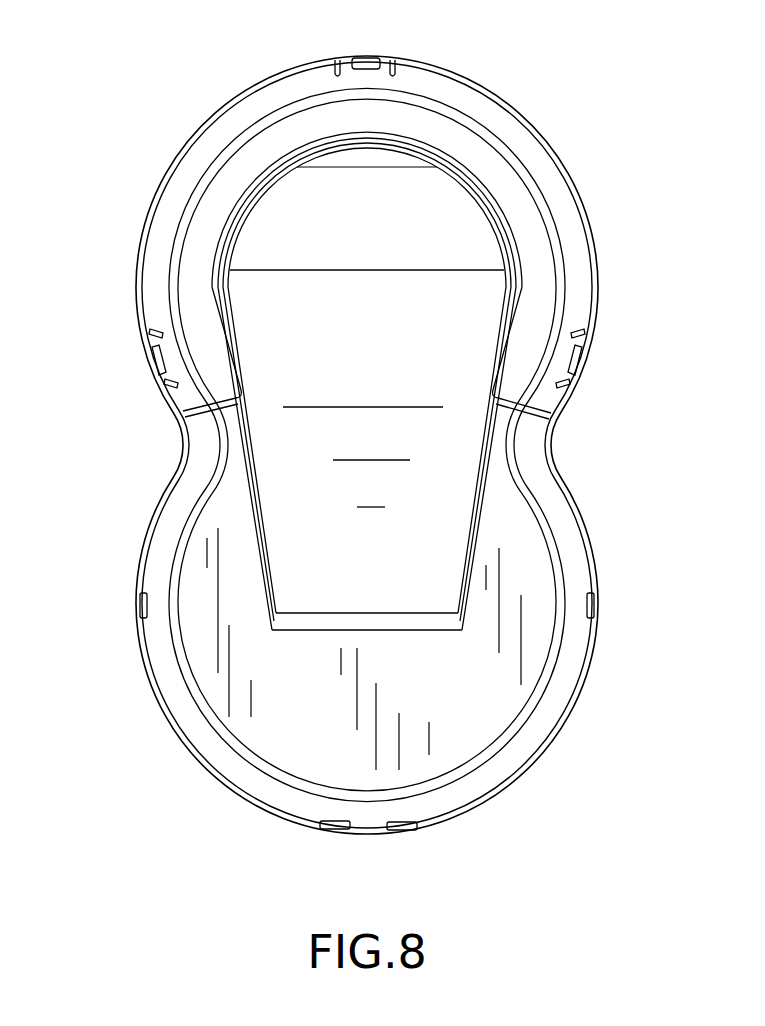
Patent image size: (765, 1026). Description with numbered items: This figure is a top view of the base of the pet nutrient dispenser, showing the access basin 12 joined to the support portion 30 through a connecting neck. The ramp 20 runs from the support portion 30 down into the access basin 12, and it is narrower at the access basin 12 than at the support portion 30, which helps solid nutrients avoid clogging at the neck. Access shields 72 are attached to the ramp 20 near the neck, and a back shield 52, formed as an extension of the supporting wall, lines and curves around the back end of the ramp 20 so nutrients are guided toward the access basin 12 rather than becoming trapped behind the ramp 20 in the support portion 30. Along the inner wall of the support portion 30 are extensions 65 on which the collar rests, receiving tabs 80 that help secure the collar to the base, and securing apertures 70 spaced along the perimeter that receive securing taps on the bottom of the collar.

The access basin 12 is at (140, 583).
The ramp 20 is at (307, 595).
The support portion 30 is at (566, 155).
The back shield 52 is at (232, 222).
The extensions 65 is at (398, 64).
The securing apertures 70 is at (369, 58).
The access shields 72 is at (533, 408).
The receiving tabs 80 is at (576, 362).